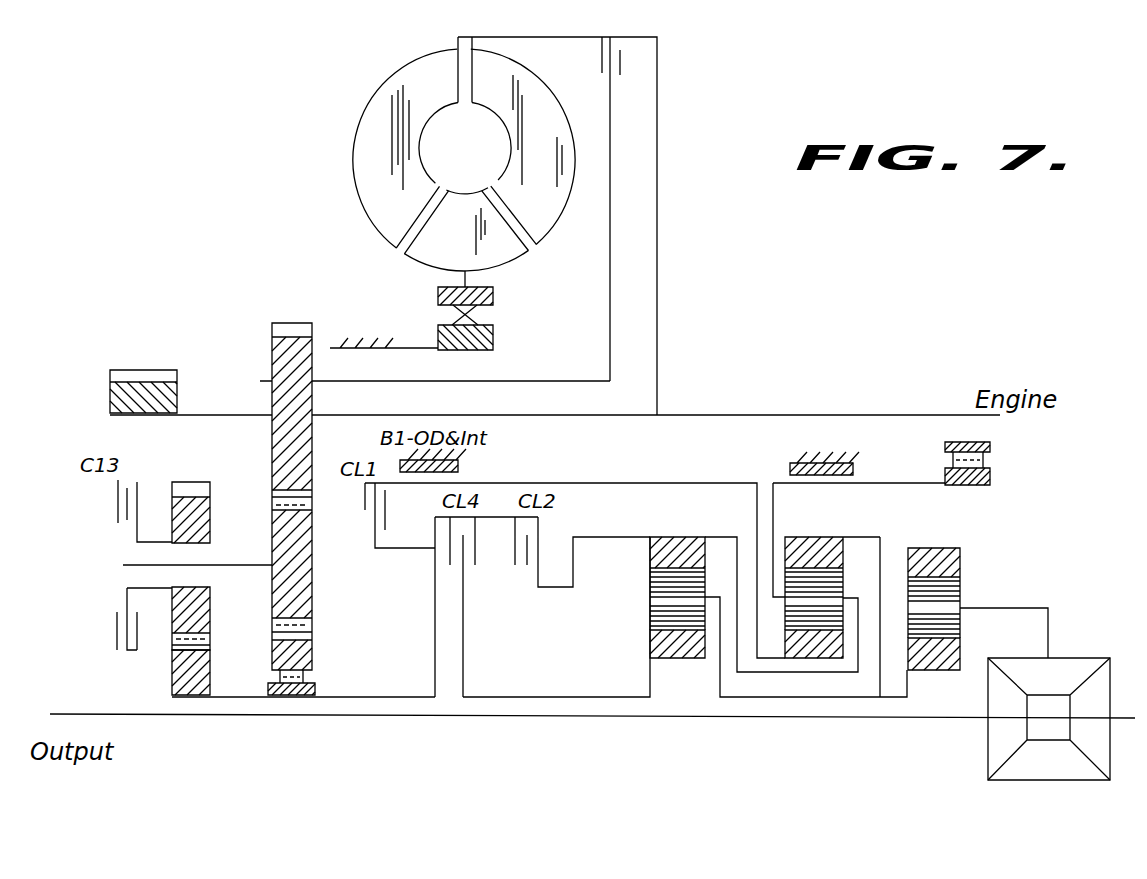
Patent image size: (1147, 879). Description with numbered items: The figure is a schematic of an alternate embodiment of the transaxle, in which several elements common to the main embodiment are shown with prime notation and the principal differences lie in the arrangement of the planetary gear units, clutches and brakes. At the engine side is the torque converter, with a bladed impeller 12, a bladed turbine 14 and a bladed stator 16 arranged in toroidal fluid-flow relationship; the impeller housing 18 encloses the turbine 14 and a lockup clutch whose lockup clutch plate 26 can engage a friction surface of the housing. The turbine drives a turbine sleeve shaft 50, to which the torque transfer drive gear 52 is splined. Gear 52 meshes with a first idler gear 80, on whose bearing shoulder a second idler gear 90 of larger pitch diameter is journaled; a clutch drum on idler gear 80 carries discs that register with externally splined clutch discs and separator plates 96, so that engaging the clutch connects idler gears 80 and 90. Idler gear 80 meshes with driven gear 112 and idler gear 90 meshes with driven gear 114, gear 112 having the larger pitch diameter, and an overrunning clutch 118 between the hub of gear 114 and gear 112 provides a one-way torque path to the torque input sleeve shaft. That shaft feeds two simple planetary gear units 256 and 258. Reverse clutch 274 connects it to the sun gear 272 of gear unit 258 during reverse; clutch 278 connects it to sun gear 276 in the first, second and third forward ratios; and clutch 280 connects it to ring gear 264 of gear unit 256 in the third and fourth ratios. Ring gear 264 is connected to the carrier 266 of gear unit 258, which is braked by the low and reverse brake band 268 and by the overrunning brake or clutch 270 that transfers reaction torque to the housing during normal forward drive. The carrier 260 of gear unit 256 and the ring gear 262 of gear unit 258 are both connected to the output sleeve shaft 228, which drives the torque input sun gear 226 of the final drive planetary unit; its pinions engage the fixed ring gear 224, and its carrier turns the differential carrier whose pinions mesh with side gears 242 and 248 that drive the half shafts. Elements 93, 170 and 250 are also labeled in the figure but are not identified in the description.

The bladed impeller 12 is at (352, 147).
The bladed turbine 14 is at (542, 98).
The bladed stator 16 is at (435, 253).
The impeller housing 18 is at (657, 207).
The lockup clutch plate 26 is at (610, 155).
The turbine sleeve shaft 50 is at (452, 383).
The torque transfer drive gear 52 is at (278, 353).
The externally splined clutch discs and separator plates 96 is at (142, 483).
The planet gear P2 93 is at (201, 485).
The first idler gear 80 is at (303, 595).
The second idler gear 90 is at (213, 618).
The driven gear 112 is at (310, 657).
The driven gear 114 is at (172, 683).
The overrunning clutch 118 is at (283, 697).
The intermediate shaft 170 is at (408, 697).
The reverse clutch 274 is at (365, 513).
The clutch 278 is at (472, 552).
The clutch 280 is at (540, 538).
The ring gear 264 is at (648, 563).
The sun gear 276 is at (650, 643).
The simple planetary gear unit 256 is at (708, 530).
The simple planetary gear unit 258 is at (821, 530).
The carrier 260 is at (717, 663).
The ring gear 262 is at (832, 542).
The carrier 266 is at (850, 593).
The low and reverse brake band 268 is at (790, 470).
The overrunning brake or clutch 270 is at (965, 485).
The sun gear 272 is at (805, 658).
The output shaft 250 is at (722, 718).
The fixed ring gear 224 is at (965, 557).
The torque input sun gear 226 is at (930, 670).
The output sleeve shaft 228 is at (867, 698).
The side gear 242 is at (1100, 687).
The side gear 248 is at (990, 752).